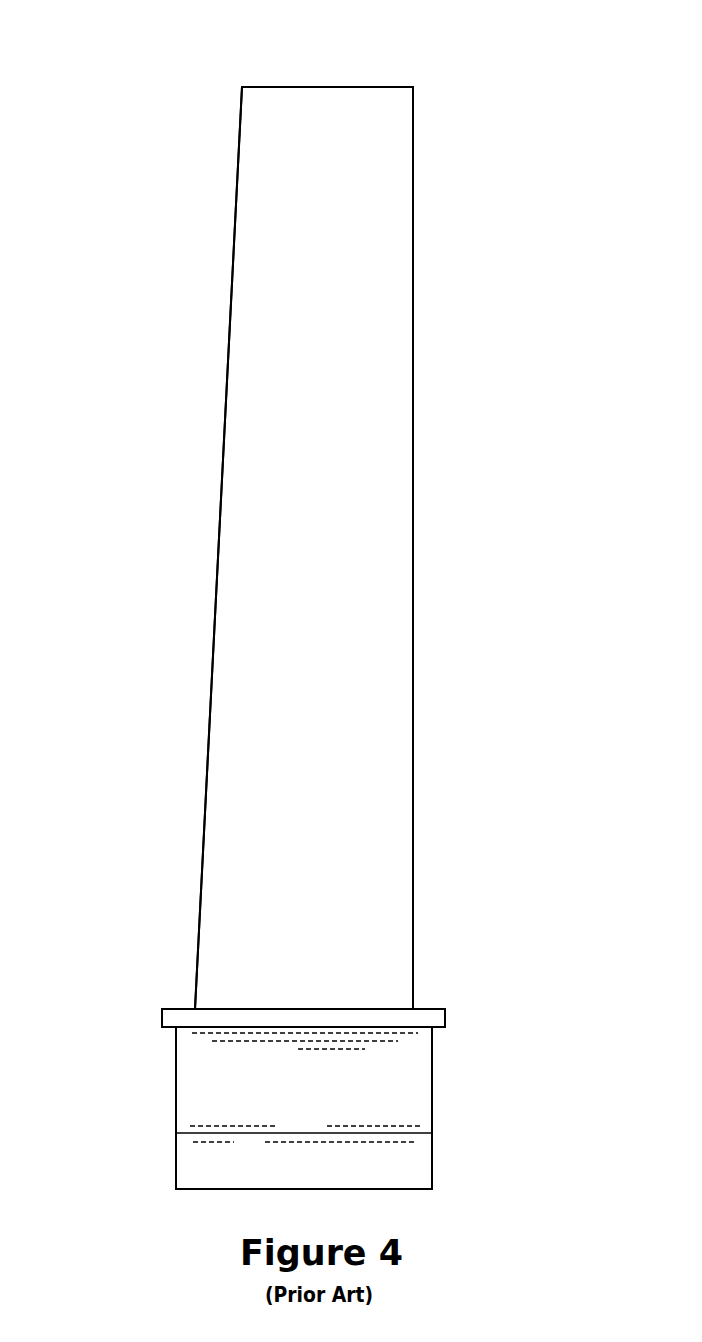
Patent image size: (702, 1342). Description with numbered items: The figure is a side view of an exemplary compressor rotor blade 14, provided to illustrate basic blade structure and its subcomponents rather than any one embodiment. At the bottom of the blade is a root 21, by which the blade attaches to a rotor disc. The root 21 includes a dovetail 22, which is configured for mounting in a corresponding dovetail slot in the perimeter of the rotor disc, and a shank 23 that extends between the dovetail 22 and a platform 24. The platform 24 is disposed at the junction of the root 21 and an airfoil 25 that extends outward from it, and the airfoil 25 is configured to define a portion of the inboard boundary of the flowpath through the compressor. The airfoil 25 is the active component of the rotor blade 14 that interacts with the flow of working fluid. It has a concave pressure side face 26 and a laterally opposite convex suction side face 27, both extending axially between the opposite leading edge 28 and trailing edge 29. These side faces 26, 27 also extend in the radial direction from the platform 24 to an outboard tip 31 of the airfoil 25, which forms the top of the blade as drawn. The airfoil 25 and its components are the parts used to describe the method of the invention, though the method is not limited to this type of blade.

The compressor rotor blade 14 is at (160, 335).
The root 21 is at (478, 1121).
The dovetail 22 is at (196, 1158).
The shank 23 is at (385, 1063).
The platform 24 is at (425, 1007).
The airfoil 25 is at (291, 510).
The pressure side face 26 is at (335, 830).
The suction side face 27 is at (452, 243).
The leading edge 28 is at (224, 452).
The trailing edge 29 is at (414, 498).
The outboard tip 31 is at (370, 87).